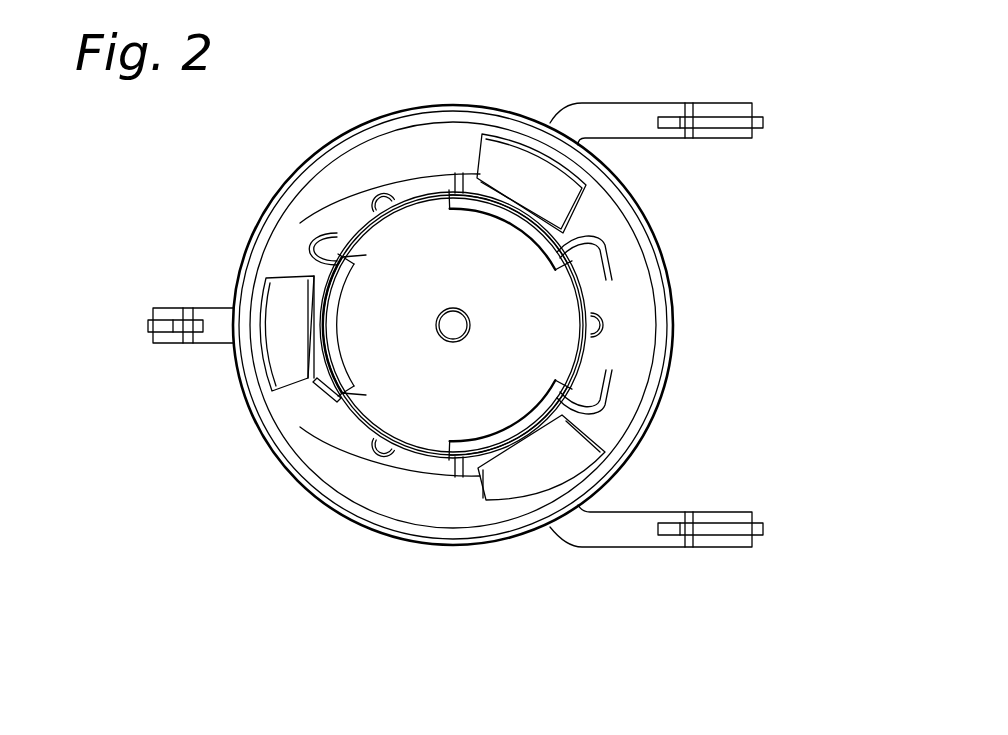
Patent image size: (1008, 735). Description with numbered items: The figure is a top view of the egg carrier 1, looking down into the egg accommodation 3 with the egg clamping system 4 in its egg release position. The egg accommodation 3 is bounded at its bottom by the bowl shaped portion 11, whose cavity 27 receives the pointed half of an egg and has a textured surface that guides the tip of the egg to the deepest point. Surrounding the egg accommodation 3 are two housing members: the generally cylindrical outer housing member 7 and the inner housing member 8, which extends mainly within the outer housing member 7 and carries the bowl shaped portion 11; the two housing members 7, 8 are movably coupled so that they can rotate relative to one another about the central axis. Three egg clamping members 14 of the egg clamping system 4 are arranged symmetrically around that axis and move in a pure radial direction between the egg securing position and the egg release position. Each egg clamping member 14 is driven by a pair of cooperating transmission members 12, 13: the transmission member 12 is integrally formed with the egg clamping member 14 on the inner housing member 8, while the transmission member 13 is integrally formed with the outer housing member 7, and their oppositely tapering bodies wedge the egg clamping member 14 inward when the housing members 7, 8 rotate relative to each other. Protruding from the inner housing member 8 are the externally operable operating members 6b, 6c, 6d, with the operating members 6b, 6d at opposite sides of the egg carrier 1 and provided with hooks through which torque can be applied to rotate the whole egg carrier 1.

The egg carrier 1 is at (576, 62).
The egg accommodation 3 is at (424, 366).
The egg clamping system 4 is at (330, 238).
The operating member 6b is at (712, 561).
The operating member 6c is at (712, 99).
The operating member 6d is at (184, 302).
The outer housing member 7 is at (281, 469).
The inner housing member 8 is at (509, 414).
The bowl shaped portion 11 is at (386, 256).
The transmission member 12 is at (284, 377).
The transmission member 13 is at (248, 297).
The egg clamping member 14 is at (510, 157).
The cavity 27 is at (454, 398).